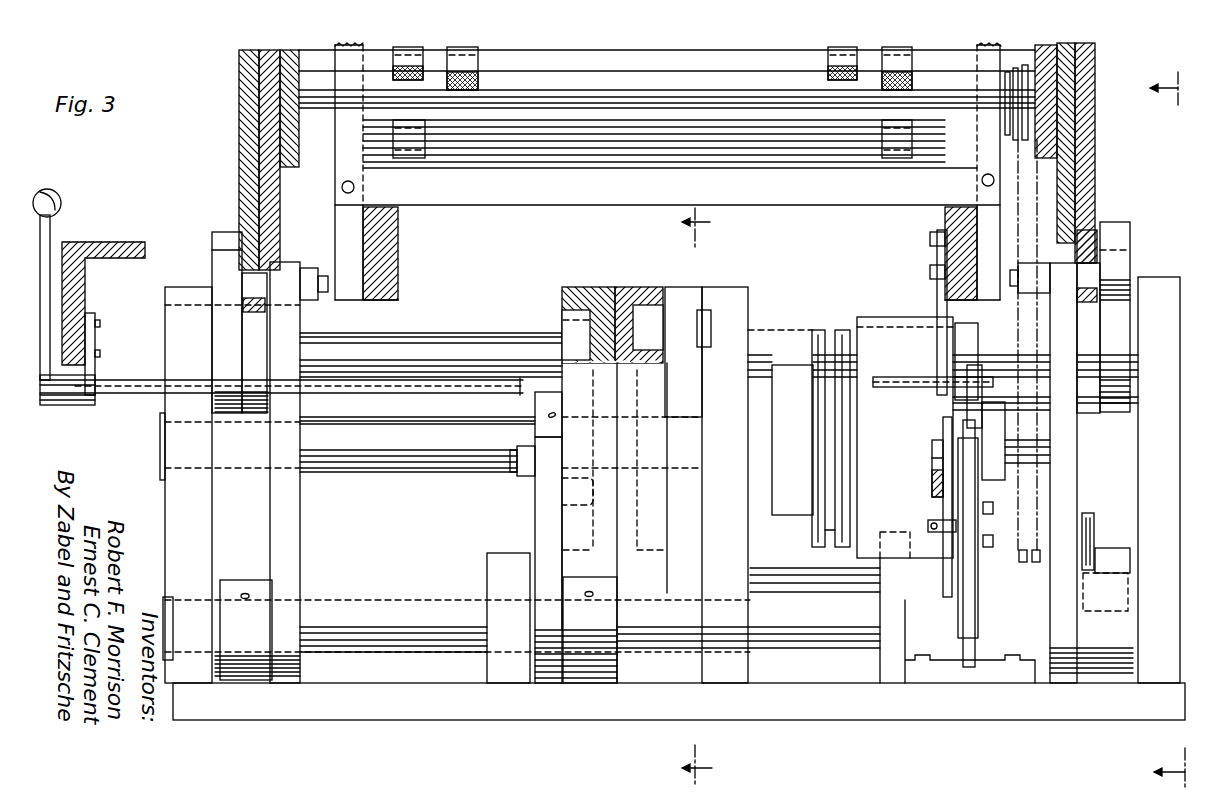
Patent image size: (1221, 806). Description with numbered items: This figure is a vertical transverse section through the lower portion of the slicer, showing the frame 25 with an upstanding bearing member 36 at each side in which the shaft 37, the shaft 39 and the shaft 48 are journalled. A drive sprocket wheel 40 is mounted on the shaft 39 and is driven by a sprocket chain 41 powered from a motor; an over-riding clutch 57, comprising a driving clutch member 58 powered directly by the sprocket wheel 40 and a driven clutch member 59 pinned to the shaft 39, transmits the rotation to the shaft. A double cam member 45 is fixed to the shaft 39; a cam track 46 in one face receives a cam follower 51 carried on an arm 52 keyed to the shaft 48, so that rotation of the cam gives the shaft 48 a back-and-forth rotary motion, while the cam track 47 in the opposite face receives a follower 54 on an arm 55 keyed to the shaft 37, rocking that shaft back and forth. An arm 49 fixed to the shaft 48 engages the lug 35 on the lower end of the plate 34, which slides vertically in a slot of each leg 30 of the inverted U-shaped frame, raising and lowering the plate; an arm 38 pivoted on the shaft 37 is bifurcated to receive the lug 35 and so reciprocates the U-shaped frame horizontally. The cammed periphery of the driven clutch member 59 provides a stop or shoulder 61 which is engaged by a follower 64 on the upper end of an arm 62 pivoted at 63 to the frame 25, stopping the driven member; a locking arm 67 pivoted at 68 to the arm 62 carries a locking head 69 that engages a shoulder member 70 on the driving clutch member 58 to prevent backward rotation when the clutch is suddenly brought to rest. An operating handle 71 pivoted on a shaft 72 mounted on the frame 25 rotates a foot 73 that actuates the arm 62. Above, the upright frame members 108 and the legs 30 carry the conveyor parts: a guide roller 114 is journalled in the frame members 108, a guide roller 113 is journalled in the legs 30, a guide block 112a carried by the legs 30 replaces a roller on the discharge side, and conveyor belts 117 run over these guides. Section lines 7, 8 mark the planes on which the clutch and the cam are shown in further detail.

The section line 7- 7 is at (1157, 431).
The section line 8- 8 is at (707, 496).
The frame 25 is at (90, 312).
The leg 30 is at (283, 223).
The plate 34 is at (258, 193).
The lug 35 is at (248, 282).
The upstanding bearing member 36 is at (205, 510).
The shaft 37 is at (396, 608).
The arm 38 is at (290, 525).
The shaft 39 is at (384, 452).
The drive sprocket wheel 40 is at (786, 365).
The sprocket chain 41 is at (840, 330).
The double cam member 45 is at (625, 276).
The cam track 46 is at (651, 287).
The cam track 47 is at (570, 320).
The shaft 48 is at (432, 333).
The arm 49 is at (212, 232).
The cam follower 51 is at (656, 308).
The arm 52 is at (690, 316).
The follower 54 is at (560, 490).
The arm 55 is at (535, 518).
The over-riding clutch 57 is at (888, 310).
The driving clutch member 58 is at (906, 318).
The driven clutch member 59 is at (970, 327).
The stop or shoulder 61 is at (970, 448).
The arm 62 is at (972, 540).
The pivot 63 is at (972, 645).
The follower 64 is at (967, 448).
The locking arm 67 is at (933, 460).
The pivot 68 is at (960, 600).
The locking head 69 is at (945, 420).
The shoulder member 70 is at (935, 442).
The operating handle 71 is at (50, 232).
The shaft 72 is at (124, 383).
The foot 73 is at (985, 400).
The upright frame member 108 is at (355, 228).
The guide block 112a is at (691, 60).
The guide roller 113 is at (585, 103).
The guide roller 114 is at (548, 150).
The conveyor belts 117 is at (905, 82).